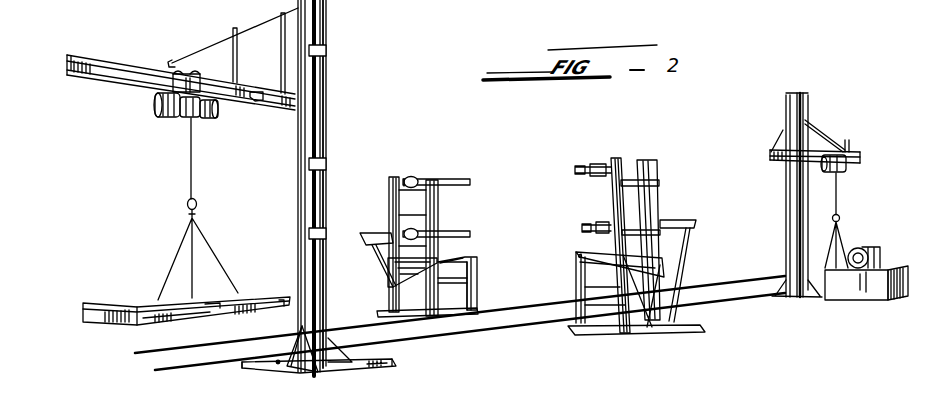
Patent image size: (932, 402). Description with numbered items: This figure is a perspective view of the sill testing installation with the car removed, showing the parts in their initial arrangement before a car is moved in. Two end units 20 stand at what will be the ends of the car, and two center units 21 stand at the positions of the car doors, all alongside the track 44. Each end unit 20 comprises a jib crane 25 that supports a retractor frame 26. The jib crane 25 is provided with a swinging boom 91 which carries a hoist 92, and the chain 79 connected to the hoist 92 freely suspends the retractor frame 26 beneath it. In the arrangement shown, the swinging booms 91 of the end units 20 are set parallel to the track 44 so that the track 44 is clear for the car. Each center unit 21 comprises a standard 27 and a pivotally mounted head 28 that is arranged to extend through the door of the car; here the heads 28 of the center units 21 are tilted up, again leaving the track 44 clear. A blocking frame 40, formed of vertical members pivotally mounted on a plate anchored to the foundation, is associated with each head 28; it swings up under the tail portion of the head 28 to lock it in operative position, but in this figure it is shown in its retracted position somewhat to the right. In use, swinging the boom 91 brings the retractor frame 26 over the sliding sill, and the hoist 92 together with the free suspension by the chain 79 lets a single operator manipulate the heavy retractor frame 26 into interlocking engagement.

The end unit 20 is at (487, 188).
The center unit 21 is at (535, 232).
The jib crane 25 is at (325, 110).
The retractor frame 26 is at (95, 302).
The standard 27 is at (470, 284).
The pivotally mounted head 28 is at (442, 218).
The blocking frame 40 is at (380, 254).
The track 44 is at (155, 352).
The chain 79 is at (190, 160).
The swinging boom 91 is at (104, 66).
The hoist 92 is at (158, 100).